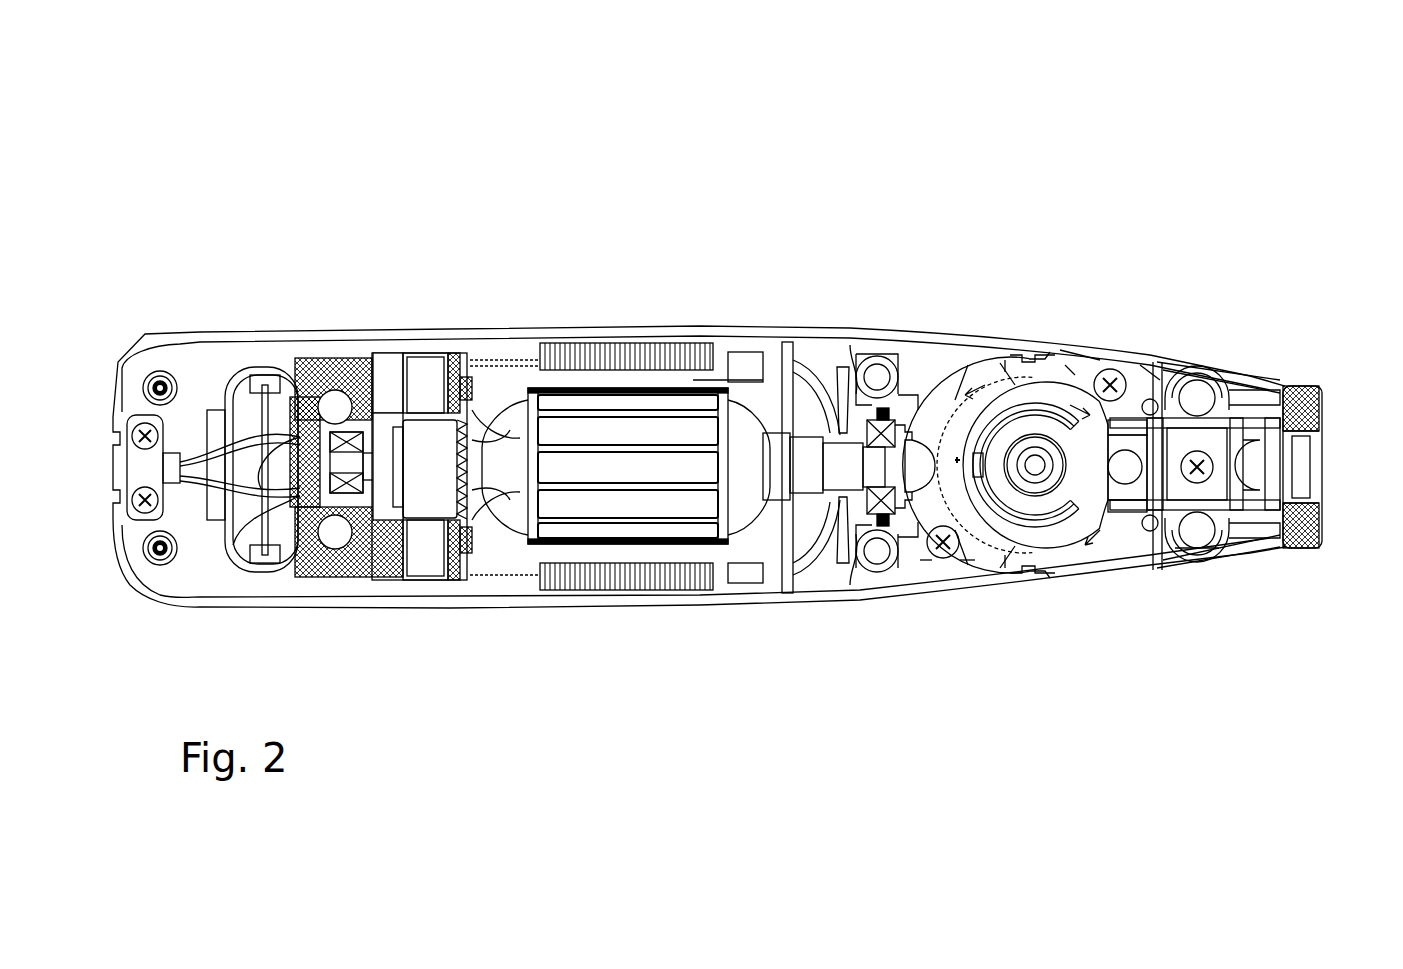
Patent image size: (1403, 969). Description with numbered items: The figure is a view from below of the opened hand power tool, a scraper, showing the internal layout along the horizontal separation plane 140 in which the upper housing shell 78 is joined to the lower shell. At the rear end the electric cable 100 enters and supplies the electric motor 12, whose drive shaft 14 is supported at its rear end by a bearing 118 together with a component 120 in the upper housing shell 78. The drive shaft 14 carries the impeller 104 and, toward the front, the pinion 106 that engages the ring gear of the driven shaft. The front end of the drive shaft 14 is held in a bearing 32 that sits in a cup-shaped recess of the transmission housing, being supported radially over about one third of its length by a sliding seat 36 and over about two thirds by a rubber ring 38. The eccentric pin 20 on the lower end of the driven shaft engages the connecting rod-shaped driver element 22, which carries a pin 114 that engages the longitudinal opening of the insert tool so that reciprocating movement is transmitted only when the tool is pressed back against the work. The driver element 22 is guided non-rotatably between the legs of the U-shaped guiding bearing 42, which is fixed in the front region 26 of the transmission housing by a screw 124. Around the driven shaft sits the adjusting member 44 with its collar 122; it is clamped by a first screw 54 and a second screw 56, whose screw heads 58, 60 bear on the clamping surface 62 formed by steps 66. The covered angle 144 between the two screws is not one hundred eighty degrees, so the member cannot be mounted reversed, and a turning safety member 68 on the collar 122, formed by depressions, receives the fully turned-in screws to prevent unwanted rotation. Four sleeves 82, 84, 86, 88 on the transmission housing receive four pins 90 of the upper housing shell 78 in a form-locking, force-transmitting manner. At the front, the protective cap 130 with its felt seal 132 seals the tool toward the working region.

The electric motor 12 is at (620, 457).
The drive shaft 14 is at (848, 462).
The eccentric pin 20 is at (1035, 440).
The driver element 22 is at (1005, 545).
The front region 26 is at (1250, 712).
The bearing 32 is at (755, 582).
The sliding seat 36 is at (875, 515).
The rubber ring 38 is at (868, 505).
The guiding bearing 42 is at (1263, 505).
The adjusting member 44 is at (1002, 483).
The first screw 54 is at (940, 560).
The second screw 56 is at (1126, 364).
The screw head 58 is at (934, 566).
The screw head 60 is at (1150, 372).
The clamping surface 62 is at (966, 566).
The steps 66 is at (1055, 350).
The turning safety member 68 is at (1070, 365).
The upper housing shell 78 is at (312, 333).
The sleeve 82 is at (863, 358).
The sleeve 84 is at (870, 553).
The sleeve 86 is at (1247, 372).
The sleeve 88 is at (1198, 483).
The pins 90 is at (881, 370).
The electric cable 100 is at (221, 362).
The impeller 104 is at (755, 353).
The pinion 106 is at (905, 410).
The pin 114 is at (1128, 485).
The bearing 118 is at (370, 578).
The component 120 is at (380, 365).
The collar 122 is at (1062, 352).
The screw 124 is at (1200, 548).
The protective cap 130 is at (1288, 550).
The felt seal 132 is at (1298, 550).
The separation plane 140 is at (540, 340).
The covered angle 144 is at (1030, 458).